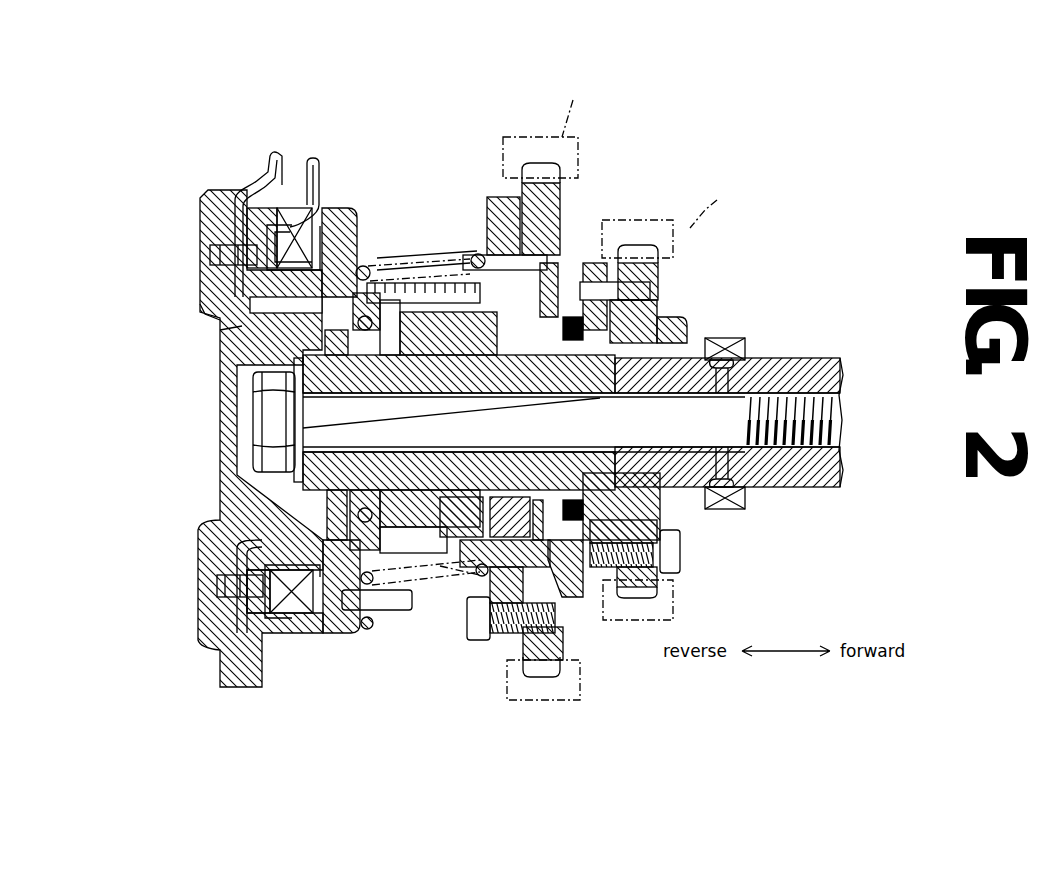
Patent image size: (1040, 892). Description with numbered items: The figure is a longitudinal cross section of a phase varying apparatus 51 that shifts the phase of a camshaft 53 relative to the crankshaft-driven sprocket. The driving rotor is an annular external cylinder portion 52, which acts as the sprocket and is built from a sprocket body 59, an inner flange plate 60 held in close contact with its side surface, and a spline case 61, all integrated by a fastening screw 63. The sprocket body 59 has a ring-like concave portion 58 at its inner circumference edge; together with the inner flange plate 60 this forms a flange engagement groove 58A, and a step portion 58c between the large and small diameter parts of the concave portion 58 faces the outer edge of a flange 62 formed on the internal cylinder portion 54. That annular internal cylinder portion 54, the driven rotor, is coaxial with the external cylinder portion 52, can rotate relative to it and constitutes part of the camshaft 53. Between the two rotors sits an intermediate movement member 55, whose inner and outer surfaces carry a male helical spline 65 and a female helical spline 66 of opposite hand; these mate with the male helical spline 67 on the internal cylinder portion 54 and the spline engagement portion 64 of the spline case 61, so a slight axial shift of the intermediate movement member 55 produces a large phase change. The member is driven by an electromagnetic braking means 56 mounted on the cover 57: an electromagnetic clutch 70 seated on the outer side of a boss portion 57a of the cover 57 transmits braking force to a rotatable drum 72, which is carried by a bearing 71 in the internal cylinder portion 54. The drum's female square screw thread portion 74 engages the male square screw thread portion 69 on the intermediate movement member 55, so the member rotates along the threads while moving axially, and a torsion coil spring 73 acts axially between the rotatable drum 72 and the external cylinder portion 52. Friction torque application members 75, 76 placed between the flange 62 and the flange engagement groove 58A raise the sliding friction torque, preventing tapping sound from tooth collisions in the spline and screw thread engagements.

The phase varying apparatus 51 is at (792, 154).
The external cylinder portion 52 is at (621, 85).
The camshaft 53 is at (772, 390).
The internal cylinder portion 54 is at (660, 318).
The intermediate movement member 55 is at (422, 310).
The electromagnetic braking means 56 is at (293, 172).
The cover 57 is at (220, 470).
The boss portion 57a is at (202, 310).
The concave portion 58 is at (572, 320).
The flange engagement groove 58A is at (756, 144).
The step portion 58c is at (665, 282).
The sprocket body 59 is at (560, 300).
The inner flange plate 60 is at (522, 185).
The spline case 61 is at (500, 197).
The flange 62 is at (565, 540).
The fastening screw 63 is at (472, 622).
The spline engagement portion 64 is at (476, 253).
The male helical spline 65 is at (296, 378).
The female helical spline 66 is at (463, 260).
The male helical spline 67 is at (255, 426).
The male square screw thread portion 69 is at (394, 283).
The electromagnetic clutch 70 is at (236, 190).
The bearing 71 is at (220, 334).
The rotatable drum 72 is at (340, 208).
The torsion coil spring 73 is at (427, 258).
The female square screw thread portion 74 is at (364, 264).
The friction torque application member 75 is at (672, 524).
The friction torque application member 76 is at (520, 660).